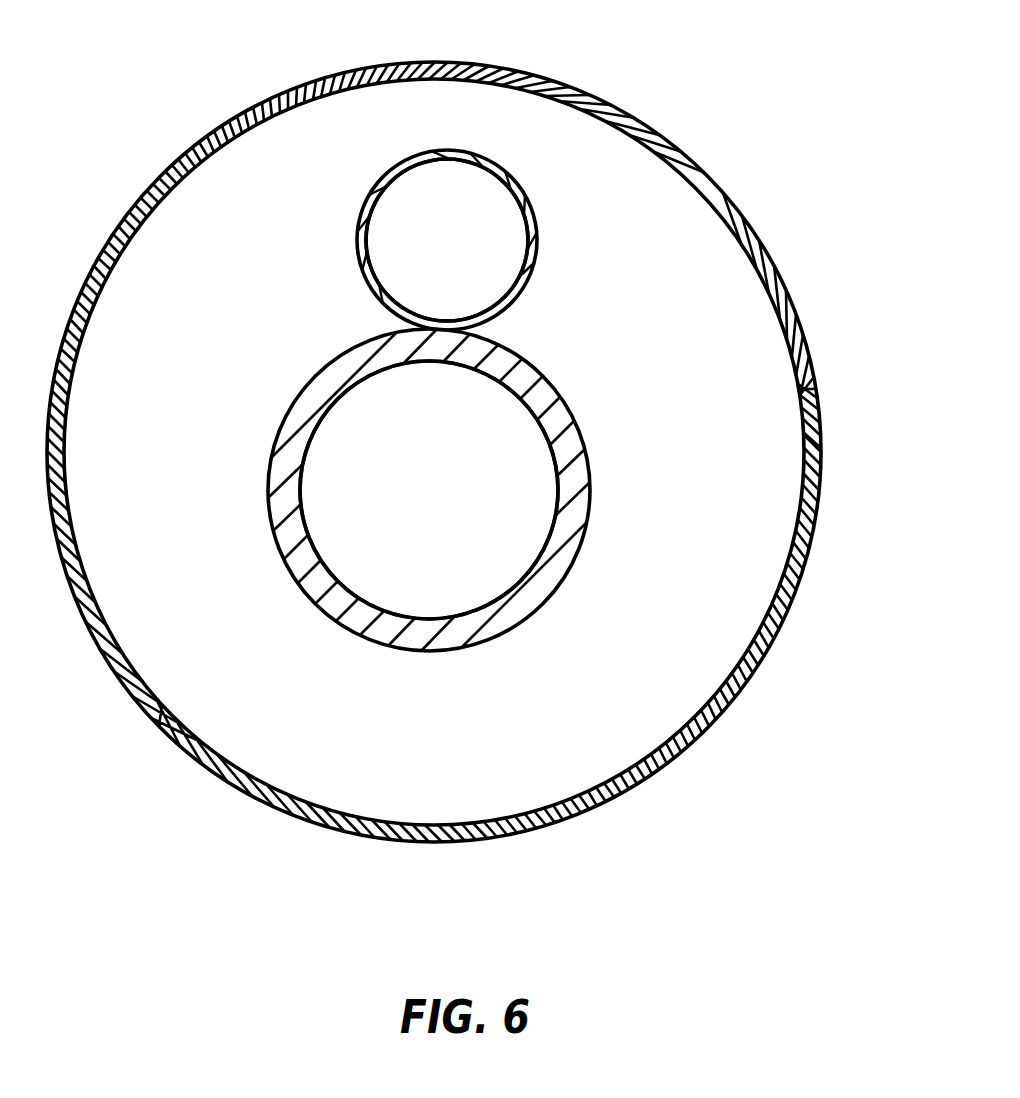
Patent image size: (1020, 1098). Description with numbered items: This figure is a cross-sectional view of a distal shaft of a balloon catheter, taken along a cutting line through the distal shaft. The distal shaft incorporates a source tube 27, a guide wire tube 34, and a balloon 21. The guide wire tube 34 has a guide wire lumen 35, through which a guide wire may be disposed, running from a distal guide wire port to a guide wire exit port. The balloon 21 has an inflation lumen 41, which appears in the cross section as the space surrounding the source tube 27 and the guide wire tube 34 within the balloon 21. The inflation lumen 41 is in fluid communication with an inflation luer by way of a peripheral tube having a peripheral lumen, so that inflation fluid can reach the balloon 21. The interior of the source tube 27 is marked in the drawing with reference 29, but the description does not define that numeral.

The balloon 21 is at (587, 97).
The source tube 27 is at (560, 572).
The central lumen 29 is at (455, 513).
The guide wire tube 34 is at (361, 219).
The guide wire lumen 35 is at (475, 265).
The inflation lumen 41 is at (698, 491).